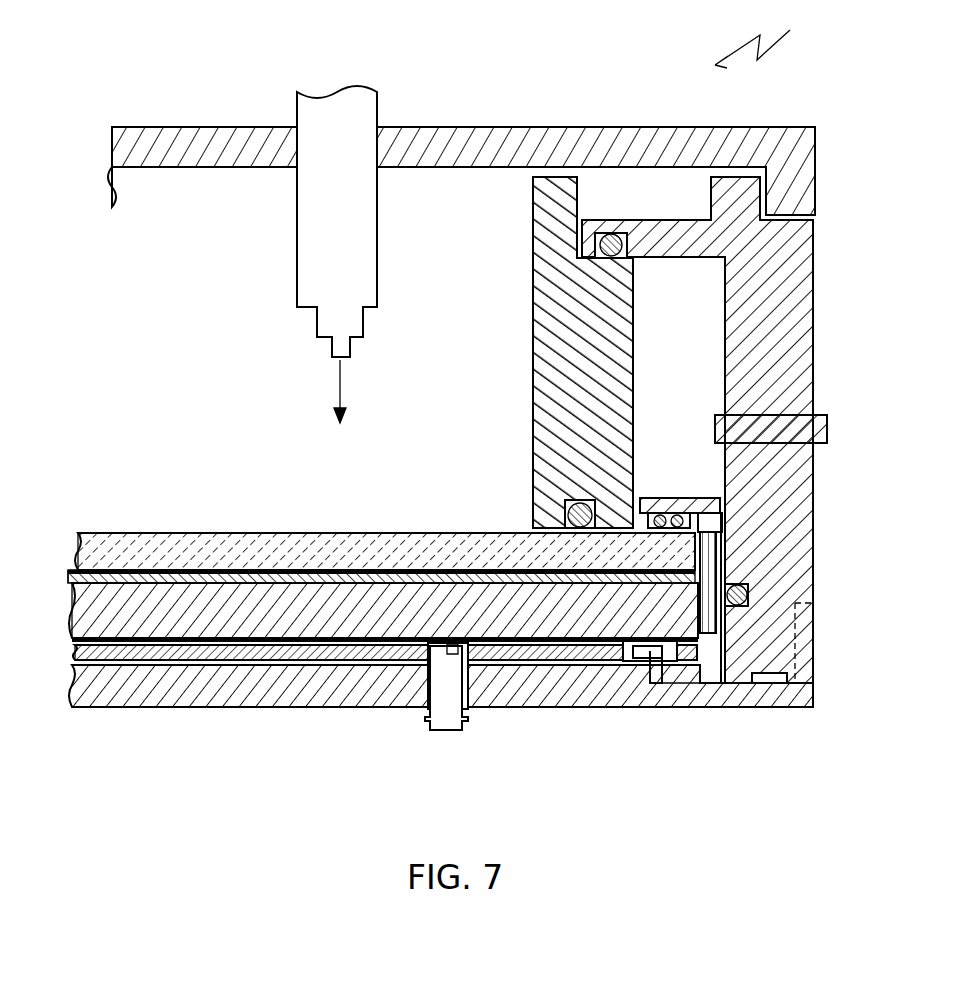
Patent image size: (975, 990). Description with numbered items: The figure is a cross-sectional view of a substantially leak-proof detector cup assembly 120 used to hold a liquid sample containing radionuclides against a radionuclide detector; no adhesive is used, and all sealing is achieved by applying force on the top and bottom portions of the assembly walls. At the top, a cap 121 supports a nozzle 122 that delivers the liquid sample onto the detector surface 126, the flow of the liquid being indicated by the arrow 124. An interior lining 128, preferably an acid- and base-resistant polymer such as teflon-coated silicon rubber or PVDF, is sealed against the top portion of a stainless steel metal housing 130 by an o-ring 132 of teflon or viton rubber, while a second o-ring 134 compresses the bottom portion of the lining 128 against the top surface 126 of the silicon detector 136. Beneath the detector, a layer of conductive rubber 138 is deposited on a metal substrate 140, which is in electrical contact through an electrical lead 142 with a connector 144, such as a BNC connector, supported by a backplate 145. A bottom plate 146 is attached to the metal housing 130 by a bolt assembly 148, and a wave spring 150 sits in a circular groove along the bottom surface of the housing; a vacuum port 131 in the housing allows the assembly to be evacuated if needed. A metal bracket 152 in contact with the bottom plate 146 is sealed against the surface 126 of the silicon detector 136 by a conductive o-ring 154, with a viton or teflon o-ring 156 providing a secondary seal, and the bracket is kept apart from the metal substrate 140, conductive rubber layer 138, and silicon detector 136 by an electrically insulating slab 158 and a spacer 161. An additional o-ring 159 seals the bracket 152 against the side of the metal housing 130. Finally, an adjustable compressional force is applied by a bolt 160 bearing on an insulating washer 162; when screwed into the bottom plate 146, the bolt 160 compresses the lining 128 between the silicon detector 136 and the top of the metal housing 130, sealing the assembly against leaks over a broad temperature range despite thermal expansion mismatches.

The detector cup assembly 120 is at (782, 40).
The cap 121 is at (805, 170).
The nozzle 122 is at (363, 287).
The arrow 124 is at (342, 398).
The detector surface 126 is at (150, 531).
The interior lining 128 is at (540, 415).
The metal housing 130 is at (793, 283).
The vacuum port 131 is at (827, 420).
The o-ring 132 is at (632, 265).
The second o-ring 134 is at (579, 505).
The silicon detector 136 is at (87, 553).
The conductive rubber layer 138 is at (64, 581).
The metal substrate 140 is at (77, 647).
The electrical lead 142 is at (423, 720).
The connector 144 is at (450, 727).
The backplate 145 is at (76, 653).
The bottom plate 146 is at (540, 693).
The bolt assembly 148 is at (800, 615).
The wave spring 150 is at (767, 683).
The metal bracket 152 is at (682, 498).
The conductive o-ring 154 is at (705, 516).
The viton o-ring 156 is at (648, 500).
The electrically insulating slab 158 is at (707, 547).
The additional o-ring 159 is at (732, 710).
The bolt 160 is at (645, 700).
The spacer 161 is at (677, 723).
The insulating washer 162 is at (660, 710).